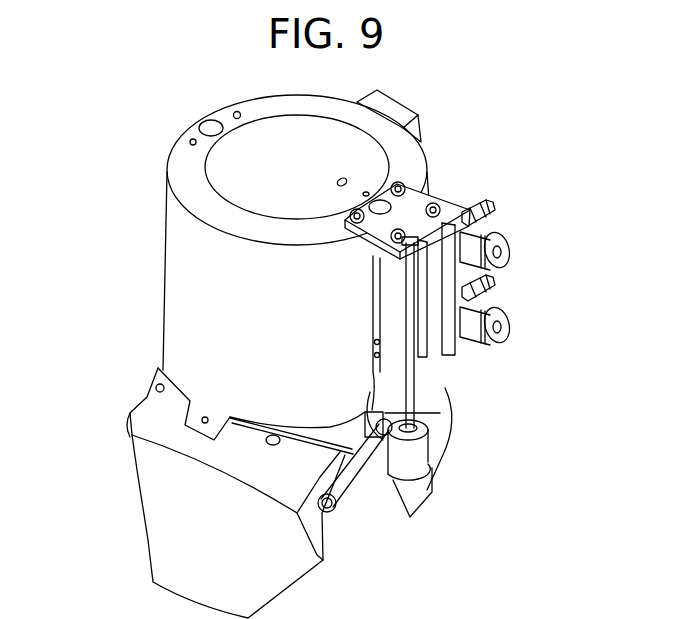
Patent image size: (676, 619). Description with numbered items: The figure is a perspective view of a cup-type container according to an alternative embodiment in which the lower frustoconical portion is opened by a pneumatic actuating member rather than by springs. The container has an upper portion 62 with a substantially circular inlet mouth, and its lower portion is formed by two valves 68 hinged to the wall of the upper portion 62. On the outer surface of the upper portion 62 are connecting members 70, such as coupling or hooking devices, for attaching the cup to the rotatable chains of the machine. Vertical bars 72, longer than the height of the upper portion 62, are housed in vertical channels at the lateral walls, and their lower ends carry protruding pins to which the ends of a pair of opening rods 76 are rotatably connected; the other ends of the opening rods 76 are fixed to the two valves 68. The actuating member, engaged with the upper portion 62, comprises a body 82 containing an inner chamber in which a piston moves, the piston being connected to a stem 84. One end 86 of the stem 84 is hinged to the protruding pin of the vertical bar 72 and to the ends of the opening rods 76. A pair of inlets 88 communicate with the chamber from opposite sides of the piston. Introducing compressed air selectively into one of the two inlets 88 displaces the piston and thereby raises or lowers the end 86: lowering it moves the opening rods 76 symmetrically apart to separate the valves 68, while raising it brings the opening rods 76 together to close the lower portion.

The upper portion 62 is at (177, 298).
The valves 68 is at (167, 538).
The connecting members 70 is at (403, 113).
The vertical bars 72 is at (373, 402).
The opening rods 76 is at (337, 487).
The body 82 is at (430, 358).
The stem 84 is at (417, 407).
The end of the stem 86 is at (423, 467).
The inlets 88 is at (510, 252).